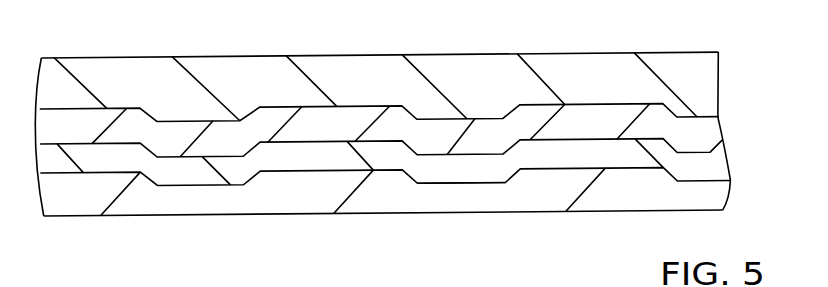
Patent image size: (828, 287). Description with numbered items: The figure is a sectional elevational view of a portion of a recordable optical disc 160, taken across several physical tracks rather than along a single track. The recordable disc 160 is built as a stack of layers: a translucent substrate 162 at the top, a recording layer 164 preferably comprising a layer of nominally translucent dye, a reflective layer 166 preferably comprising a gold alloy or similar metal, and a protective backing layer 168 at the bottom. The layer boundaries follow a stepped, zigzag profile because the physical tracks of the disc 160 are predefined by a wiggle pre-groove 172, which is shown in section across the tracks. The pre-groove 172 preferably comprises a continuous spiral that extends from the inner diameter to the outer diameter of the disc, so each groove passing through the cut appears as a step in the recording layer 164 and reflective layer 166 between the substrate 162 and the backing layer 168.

The recordable optical disc 160 is at (630, 23).
The translucent substrate 162 is at (243, 72).
The recording layer 164 is at (358, 118).
The reflective layer 166 is at (293, 157).
The protective backing layer 168 is at (137, 200).
The wiggle pre-groove 172 is at (468, 185).